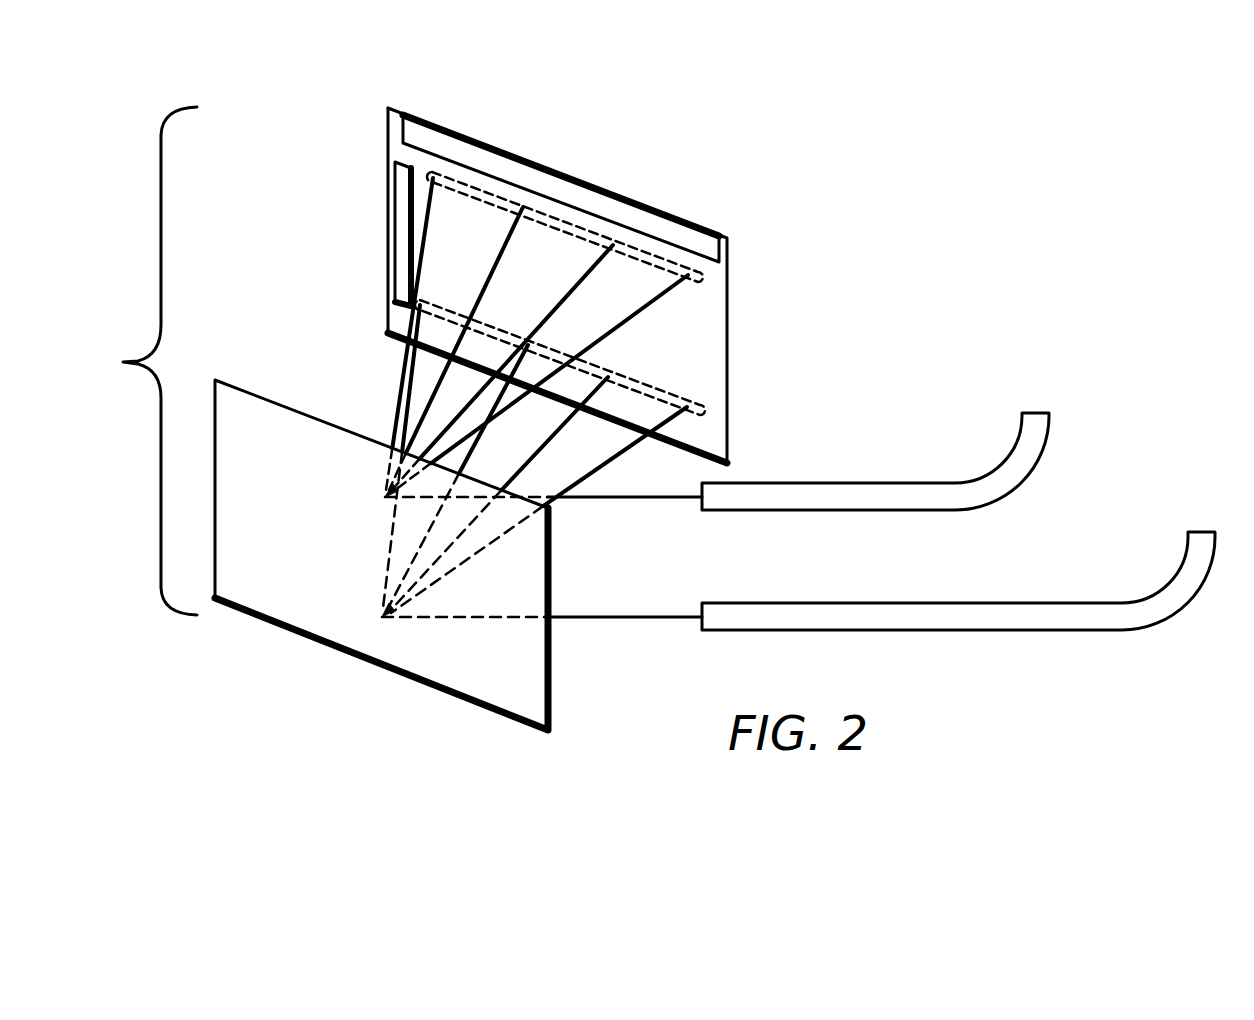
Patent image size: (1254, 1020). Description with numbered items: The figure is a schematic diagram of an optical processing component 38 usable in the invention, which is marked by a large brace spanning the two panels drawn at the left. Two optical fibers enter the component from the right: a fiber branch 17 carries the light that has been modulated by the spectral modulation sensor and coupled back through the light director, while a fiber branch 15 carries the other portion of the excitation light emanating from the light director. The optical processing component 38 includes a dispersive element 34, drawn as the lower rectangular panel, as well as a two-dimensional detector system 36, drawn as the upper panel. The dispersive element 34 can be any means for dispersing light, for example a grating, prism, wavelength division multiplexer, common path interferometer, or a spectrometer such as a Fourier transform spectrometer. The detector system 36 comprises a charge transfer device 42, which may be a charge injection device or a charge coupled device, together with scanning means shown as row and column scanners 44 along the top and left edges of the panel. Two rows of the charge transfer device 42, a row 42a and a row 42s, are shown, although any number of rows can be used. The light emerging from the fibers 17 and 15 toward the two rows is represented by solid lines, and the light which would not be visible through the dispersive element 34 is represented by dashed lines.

The optical processing component 38 is at (140, 361).
The two-dimensional detector system 36 is at (382, 298).
The row and column scanners 44 is at (403, 245).
The charge transfer device 42 is at (697, 365).
The row 42a is at (704, 277).
The row 42s is at (704, 412).
The dispersive element 34 is at (550, 708).
The fiber branch 17 is at (817, 492).
The fiber branch 15 is at (995, 612).